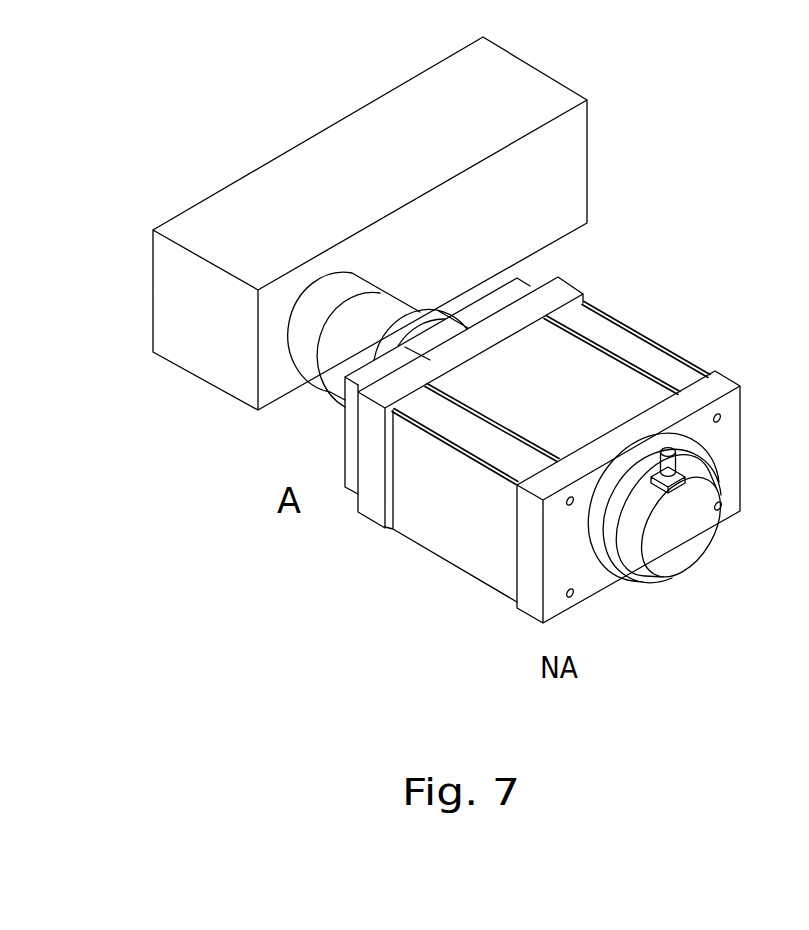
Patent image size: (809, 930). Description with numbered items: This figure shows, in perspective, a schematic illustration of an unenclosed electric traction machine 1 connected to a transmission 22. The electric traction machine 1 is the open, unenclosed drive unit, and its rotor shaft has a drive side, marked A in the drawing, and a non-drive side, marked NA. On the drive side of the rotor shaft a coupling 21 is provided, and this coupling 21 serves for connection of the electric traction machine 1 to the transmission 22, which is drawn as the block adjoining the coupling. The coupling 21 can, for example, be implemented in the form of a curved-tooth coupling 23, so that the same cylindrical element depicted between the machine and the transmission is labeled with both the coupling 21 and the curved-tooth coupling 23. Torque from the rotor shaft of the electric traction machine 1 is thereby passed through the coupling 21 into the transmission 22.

The transmission 22 is at (310, 188).
The coupling 21 is at (358, 331).
The curved-tooth coupling 23 is at (358, 331).
The electric traction machine 1 is at (668, 313).